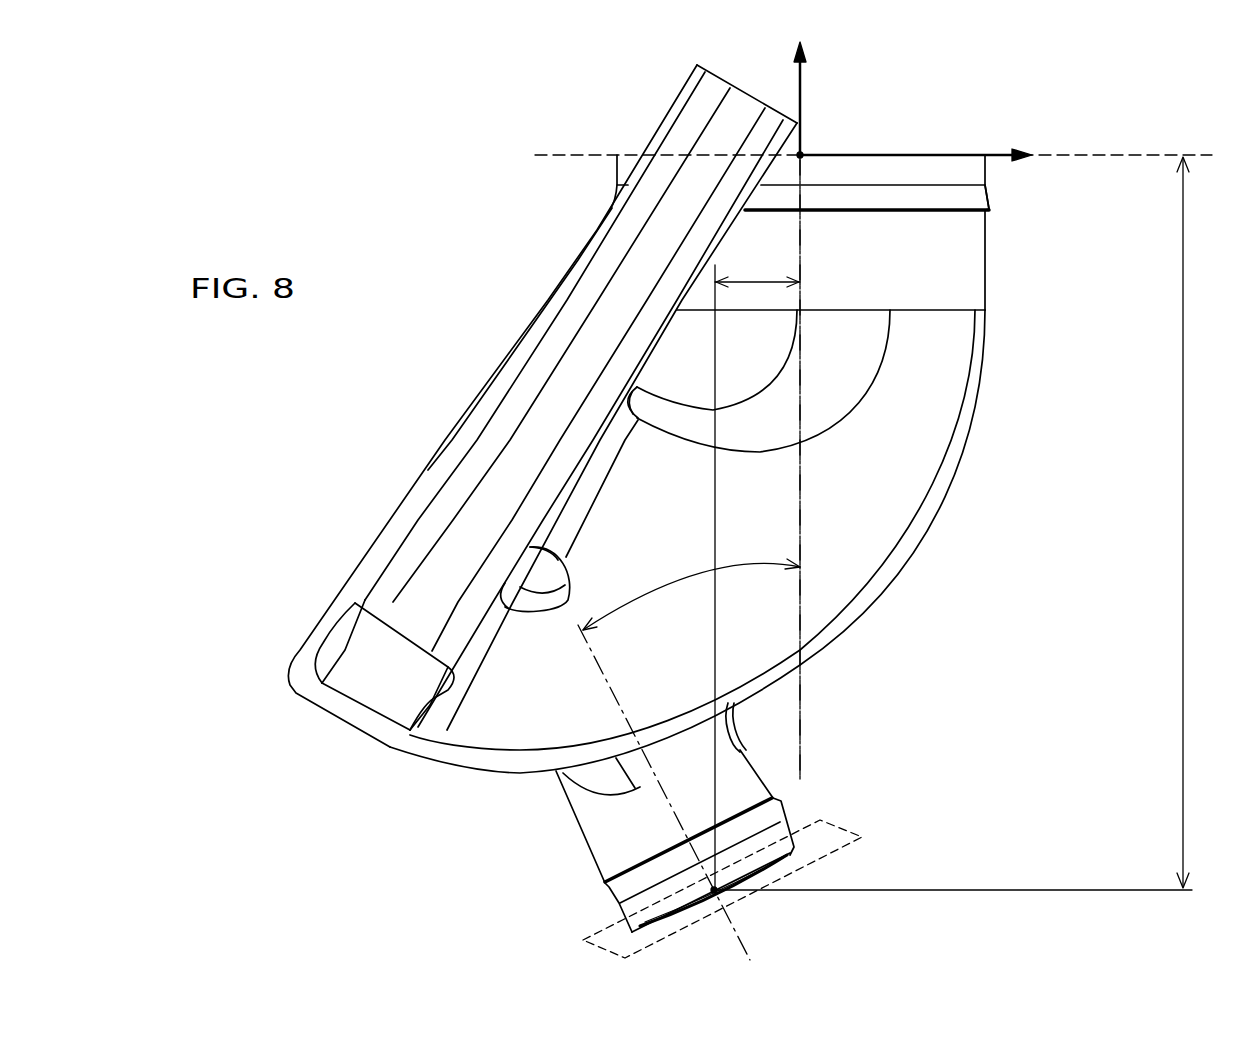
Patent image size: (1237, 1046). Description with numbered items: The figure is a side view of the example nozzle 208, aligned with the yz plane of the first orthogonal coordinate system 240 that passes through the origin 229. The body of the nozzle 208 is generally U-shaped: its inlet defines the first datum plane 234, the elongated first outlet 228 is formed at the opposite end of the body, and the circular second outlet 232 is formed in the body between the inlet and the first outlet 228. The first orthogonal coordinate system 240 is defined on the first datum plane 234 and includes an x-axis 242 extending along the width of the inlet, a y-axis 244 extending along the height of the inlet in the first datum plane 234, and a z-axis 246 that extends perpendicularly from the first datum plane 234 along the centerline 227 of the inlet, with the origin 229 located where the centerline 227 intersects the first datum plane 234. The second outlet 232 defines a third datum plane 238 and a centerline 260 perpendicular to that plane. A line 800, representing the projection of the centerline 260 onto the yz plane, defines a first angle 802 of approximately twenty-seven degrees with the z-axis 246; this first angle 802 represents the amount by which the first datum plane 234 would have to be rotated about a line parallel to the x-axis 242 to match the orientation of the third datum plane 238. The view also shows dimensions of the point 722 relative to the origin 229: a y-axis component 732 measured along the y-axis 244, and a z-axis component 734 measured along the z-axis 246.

The nozzle 208 is at (975, 513).
The centerline 227 is at (806, 470).
The first outlet 228 is at (746, 92).
The origin 229 is at (805, 154).
The second outlet 232 is at (793, 852).
The first datum plane 234 is at (560, 155).
The third datum plane 238 is at (783, 902).
The first orthogonal coordinate system 240 is at (870, 411).
The x-axis 242 is at (960, 152).
The y-axis 244 is at (995, 157).
The z-axis 246 is at (802, 92).
The centerline 260 is at (585, 672).
The point 722 is at (713, 891).
The y-axis component 732 is at (747, 282).
The z-axis component 734 is at (1183, 413).
The line 800 is at (608, 792).
The first angle 802 is at (690, 572).